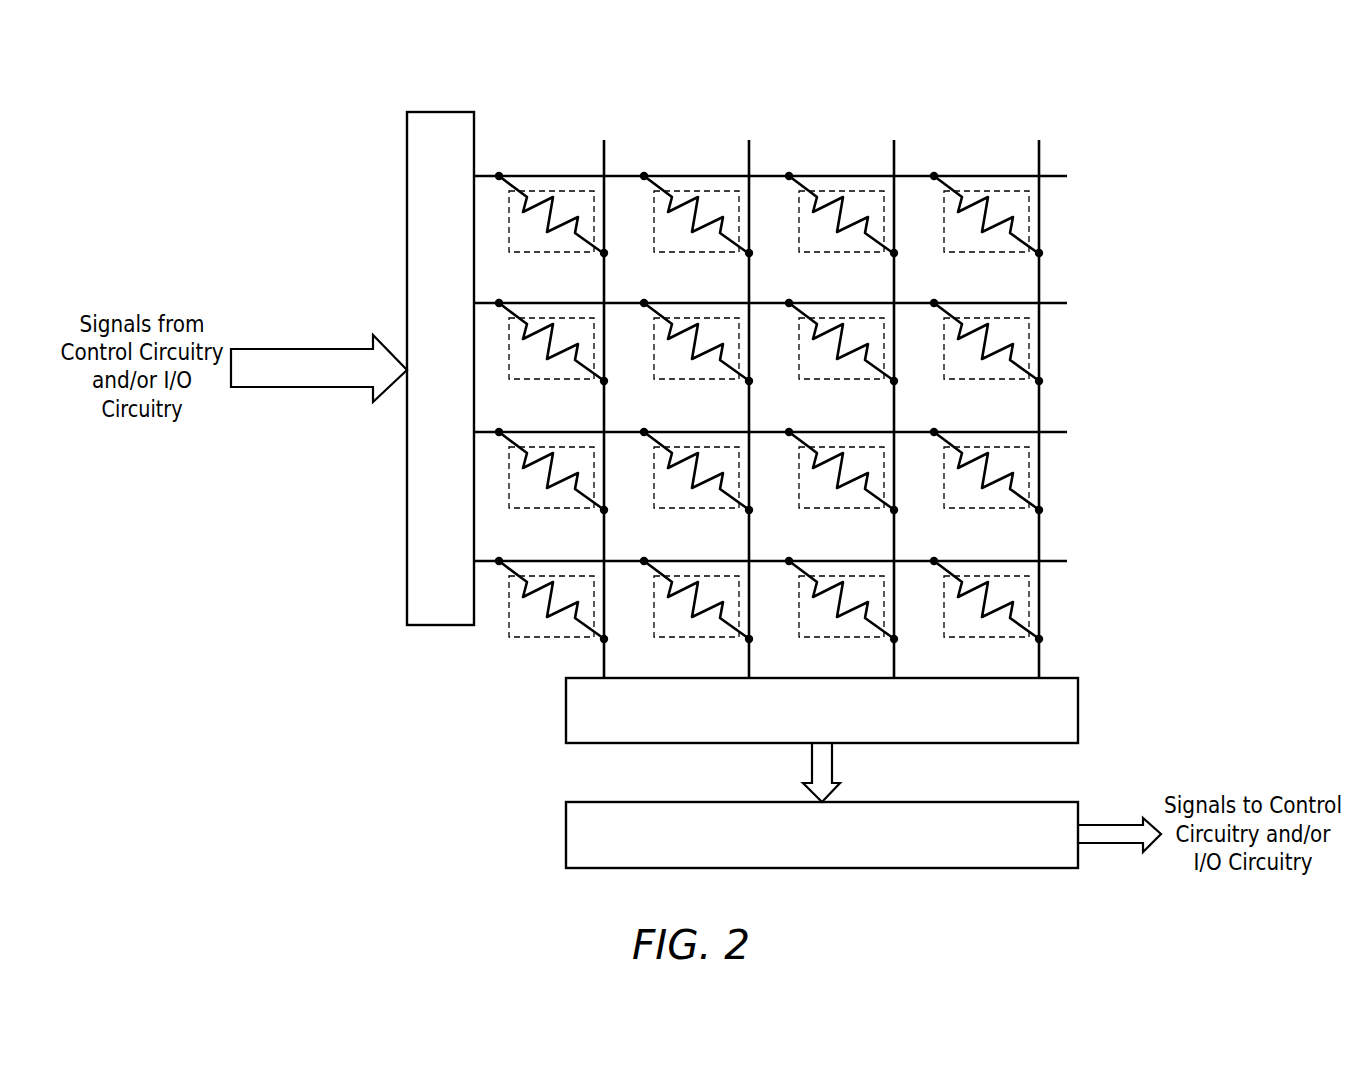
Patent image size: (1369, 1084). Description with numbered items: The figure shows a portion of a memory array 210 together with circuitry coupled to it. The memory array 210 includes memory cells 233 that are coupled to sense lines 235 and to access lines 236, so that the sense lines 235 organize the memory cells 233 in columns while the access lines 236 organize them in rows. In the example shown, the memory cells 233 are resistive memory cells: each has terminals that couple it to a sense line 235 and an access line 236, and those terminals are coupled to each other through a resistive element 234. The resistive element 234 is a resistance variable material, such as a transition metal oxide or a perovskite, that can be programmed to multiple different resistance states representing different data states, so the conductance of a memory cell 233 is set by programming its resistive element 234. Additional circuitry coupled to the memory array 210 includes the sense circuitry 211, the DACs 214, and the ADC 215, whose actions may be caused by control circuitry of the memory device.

The memory array 210 is at (1120, 77).
The sense circuitry 211 is at (583, 678).
The DACs 214 is at (441, 112).
The ADC 215 is at (638, 802).
The memory cells 233 is at (572, 190).
The resistive element 234 is at (538, 198).
The sense lines 235 is at (605, 157).
The access lines 236 is at (1053, 176).